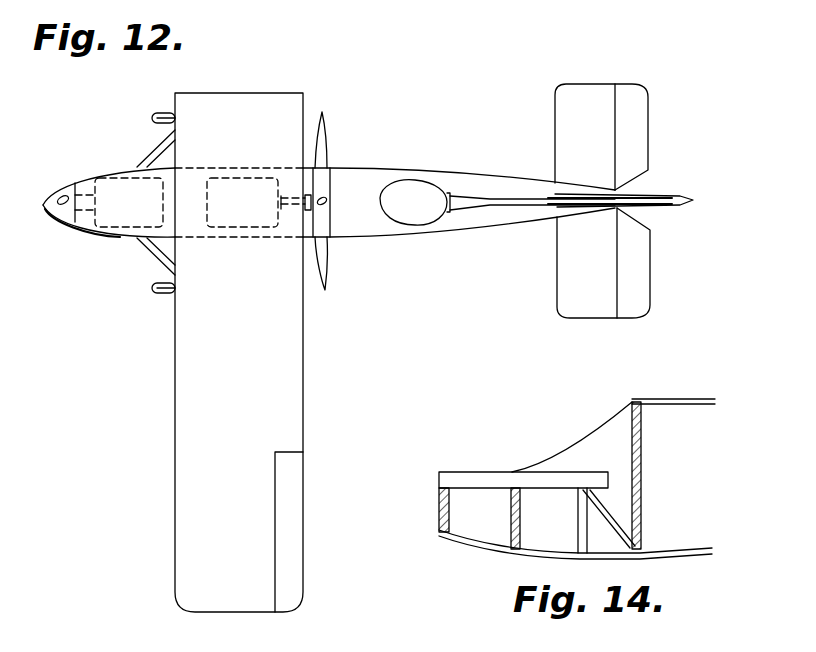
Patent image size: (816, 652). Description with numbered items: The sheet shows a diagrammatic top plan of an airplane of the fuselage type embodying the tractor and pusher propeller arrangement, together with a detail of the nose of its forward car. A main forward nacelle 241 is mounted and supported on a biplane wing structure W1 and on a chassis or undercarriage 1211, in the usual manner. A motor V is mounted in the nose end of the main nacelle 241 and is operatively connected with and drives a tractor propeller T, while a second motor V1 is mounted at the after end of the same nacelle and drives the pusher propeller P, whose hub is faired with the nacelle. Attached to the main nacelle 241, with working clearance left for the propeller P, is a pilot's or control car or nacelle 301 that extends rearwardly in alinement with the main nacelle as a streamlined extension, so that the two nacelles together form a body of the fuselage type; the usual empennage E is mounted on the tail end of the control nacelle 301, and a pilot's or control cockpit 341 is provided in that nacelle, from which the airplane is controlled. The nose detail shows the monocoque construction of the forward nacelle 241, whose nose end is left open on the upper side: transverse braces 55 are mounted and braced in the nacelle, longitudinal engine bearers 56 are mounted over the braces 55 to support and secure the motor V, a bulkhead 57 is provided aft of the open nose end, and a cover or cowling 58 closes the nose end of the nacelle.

In FIG. 12, the biplane wing structure W1 is at (290, 336).
In FIG. 12, the main forward nacelle 241 is at (118, 238).
In FIG. 14, the main forward nacelle 241 is at (672, 399).
In FIG. 12, the tractor propeller T is at (59, 209).
In FIG. 12, the cover or cowling 58 is at (83, 187).
In FIG. 12, the motor V is at (107, 183).
In FIG. 12, the motor V1 is at (238, 190).
In FIG. 12, the chassis or undercarriage 1211 is at (162, 269).
In FIG. 12, the pilot's or control car or nacelle 301 is at (375, 176).
In FIG. 12, the pusher propeller P is at (325, 137).
In FIG. 12, the pilot's or control cockpit 341 is at (420, 197).
In FIG. 12, the empennage E is at (620, 201).
In FIG. 14, the longitudinal engine bearers 56 is at (486, 483).
In FIG. 14, the transverse braces 55 is at (449, 510).
In FIG. 14, the bulkhead 57 is at (643, 478).